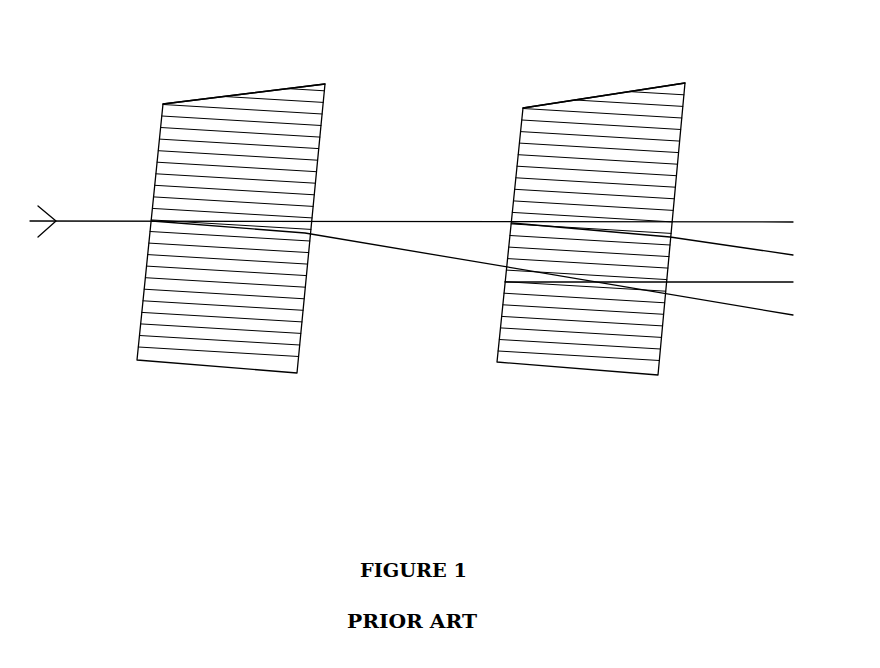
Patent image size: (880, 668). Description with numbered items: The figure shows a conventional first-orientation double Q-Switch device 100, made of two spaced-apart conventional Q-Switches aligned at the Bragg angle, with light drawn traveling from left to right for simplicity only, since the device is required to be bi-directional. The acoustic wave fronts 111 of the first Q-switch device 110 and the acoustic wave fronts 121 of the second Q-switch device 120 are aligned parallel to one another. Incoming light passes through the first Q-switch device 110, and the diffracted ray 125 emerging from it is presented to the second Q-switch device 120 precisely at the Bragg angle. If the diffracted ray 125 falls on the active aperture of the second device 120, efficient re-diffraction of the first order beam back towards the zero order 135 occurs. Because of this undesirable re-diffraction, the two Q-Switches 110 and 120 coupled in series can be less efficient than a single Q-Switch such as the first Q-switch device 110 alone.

The double Q-Switch device 100 is at (415, 236).
The first Q-switch device 110 is at (295, 368).
The acoustic wave fronts 111 is at (283, 117).
The second Q-switch device 120 is at (657, 372).
The acoustic wave fronts 121 is at (583, 120).
The diffracted ray 125 is at (373, 245).
The zero order 135 is at (763, 283).